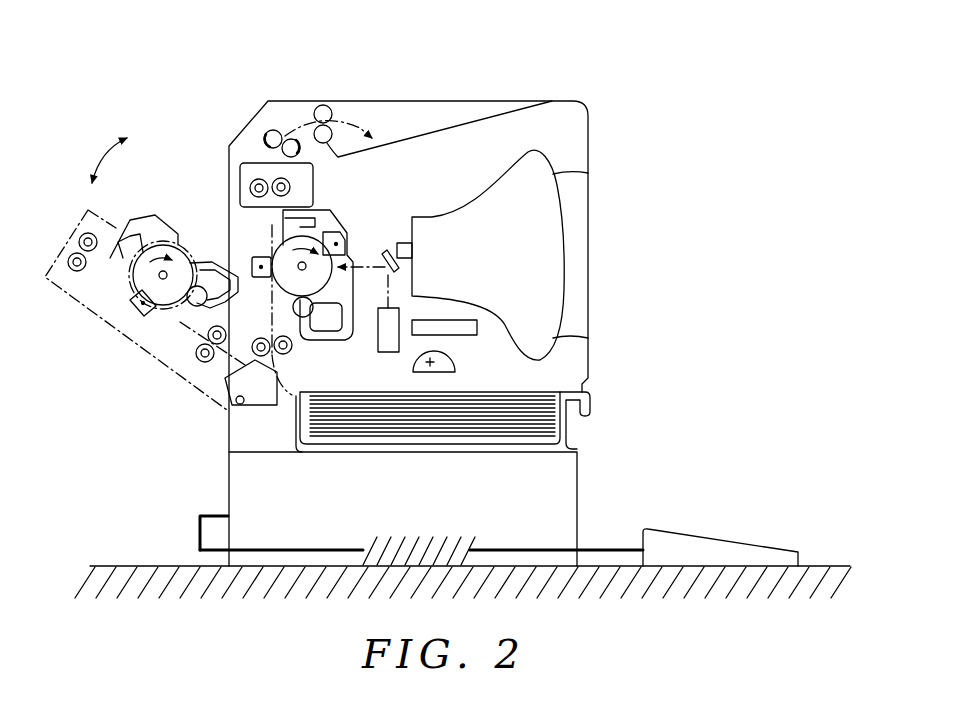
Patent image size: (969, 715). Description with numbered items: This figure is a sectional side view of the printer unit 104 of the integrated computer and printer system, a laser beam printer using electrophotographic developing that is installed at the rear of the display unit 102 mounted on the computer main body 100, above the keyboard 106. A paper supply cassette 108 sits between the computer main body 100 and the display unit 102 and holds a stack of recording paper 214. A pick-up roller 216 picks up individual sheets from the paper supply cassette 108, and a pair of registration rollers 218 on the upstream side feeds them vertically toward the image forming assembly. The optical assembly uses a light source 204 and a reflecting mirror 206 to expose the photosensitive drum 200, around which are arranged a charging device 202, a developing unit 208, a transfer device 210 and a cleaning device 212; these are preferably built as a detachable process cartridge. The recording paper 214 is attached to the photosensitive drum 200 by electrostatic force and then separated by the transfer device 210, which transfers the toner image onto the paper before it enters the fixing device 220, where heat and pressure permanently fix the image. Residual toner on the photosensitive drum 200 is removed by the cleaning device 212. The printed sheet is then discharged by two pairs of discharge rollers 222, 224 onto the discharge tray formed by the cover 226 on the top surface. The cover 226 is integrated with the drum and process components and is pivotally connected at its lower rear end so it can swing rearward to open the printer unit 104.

The computer main body 100 is at (570, 498).
The display unit 102 is at (555, 256).
The printer unit 104 is at (425, 174).
The keyboard 106 is at (722, 548).
The paper supply cassette 108 is at (563, 427).
The photosensitive drum 200 is at (285, 235).
The charging device 202 is at (330, 212).
The light source 204 is at (381, 343).
The reflecting mirror 206 is at (387, 256).
The developing unit 208 is at (340, 333).
The transfer device 210 is at (254, 262).
The cleaning device 212 is at (250, 186).
The recording paper 214 is at (523, 402).
The pick-up roller 216 is at (439, 367).
The registration rollers 218 is at (225, 378).
The fixing device 220 is at (255, 183).
The discharge rollers 222 is at (270, 188).
The discharge rollers 224 is at (332, 113).
The cover 226 is at (466, 122).